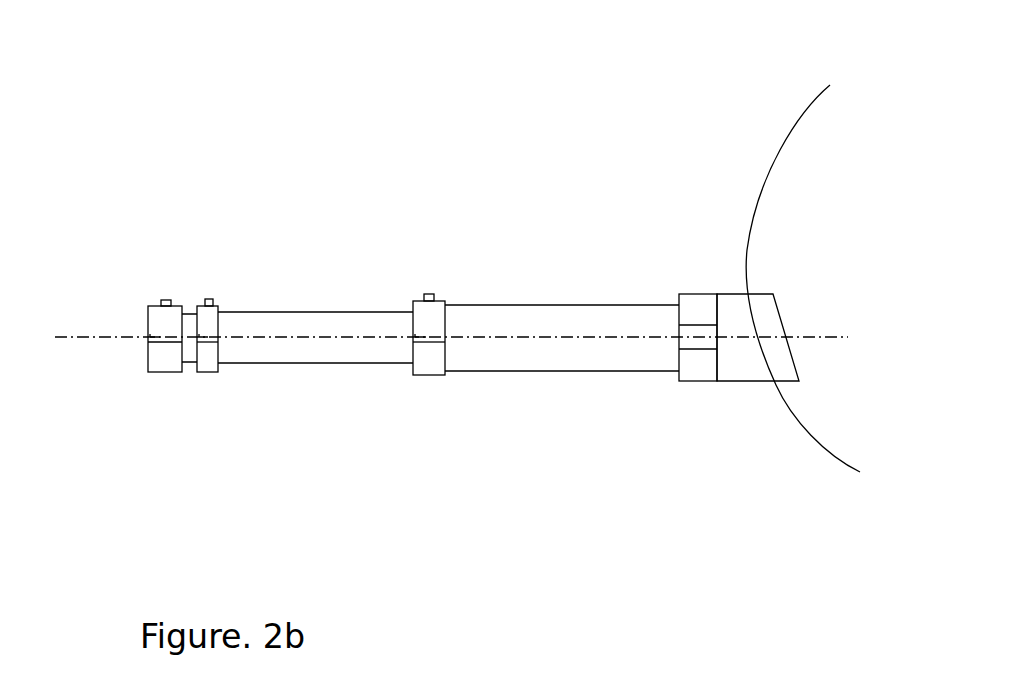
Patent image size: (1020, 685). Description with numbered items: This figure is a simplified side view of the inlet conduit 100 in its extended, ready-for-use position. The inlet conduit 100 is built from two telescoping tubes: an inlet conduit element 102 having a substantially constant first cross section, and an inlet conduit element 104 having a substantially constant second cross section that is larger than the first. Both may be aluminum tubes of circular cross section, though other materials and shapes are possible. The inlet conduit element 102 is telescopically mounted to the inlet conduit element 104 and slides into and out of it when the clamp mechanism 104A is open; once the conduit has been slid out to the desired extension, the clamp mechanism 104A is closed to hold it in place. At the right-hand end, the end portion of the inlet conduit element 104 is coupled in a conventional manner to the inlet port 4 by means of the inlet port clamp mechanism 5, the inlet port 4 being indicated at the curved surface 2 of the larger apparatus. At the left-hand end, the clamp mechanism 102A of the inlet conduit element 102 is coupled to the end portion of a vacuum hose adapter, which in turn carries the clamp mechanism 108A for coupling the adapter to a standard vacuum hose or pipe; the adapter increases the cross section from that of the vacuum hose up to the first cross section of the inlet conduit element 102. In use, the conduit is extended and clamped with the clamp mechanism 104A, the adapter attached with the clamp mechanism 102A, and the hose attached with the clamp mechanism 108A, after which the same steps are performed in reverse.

The inlet conduit 100 is at (583, 138).
The body surface 2 is at (817, 202).
The inlet port 4 is at (755, 355).
The inlet port clamp mechanism 5 is at (705, 365).
The inlet conduit element 102 is at (318, 345).
The clamp mechanism 102A is at (209, 360).
The inlet conduit element 104 is at (572, 350).
The clamp mechanism 104A is at (434, 357).
The clamp mechanism 108A is at (169, 360).